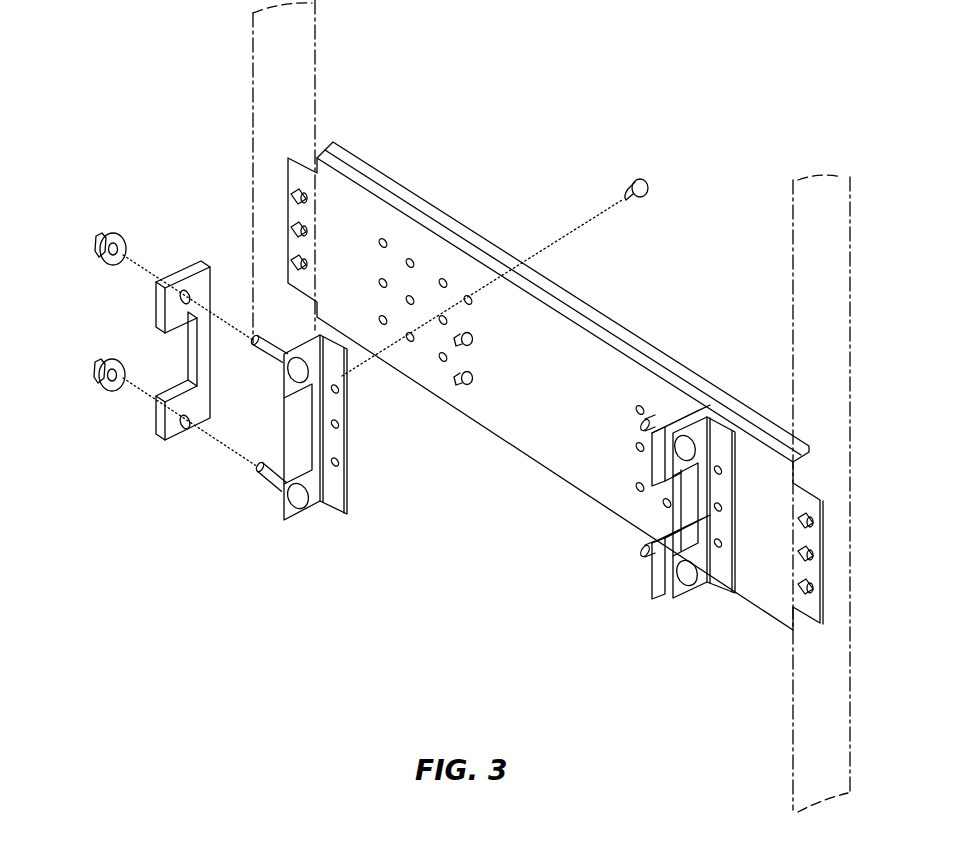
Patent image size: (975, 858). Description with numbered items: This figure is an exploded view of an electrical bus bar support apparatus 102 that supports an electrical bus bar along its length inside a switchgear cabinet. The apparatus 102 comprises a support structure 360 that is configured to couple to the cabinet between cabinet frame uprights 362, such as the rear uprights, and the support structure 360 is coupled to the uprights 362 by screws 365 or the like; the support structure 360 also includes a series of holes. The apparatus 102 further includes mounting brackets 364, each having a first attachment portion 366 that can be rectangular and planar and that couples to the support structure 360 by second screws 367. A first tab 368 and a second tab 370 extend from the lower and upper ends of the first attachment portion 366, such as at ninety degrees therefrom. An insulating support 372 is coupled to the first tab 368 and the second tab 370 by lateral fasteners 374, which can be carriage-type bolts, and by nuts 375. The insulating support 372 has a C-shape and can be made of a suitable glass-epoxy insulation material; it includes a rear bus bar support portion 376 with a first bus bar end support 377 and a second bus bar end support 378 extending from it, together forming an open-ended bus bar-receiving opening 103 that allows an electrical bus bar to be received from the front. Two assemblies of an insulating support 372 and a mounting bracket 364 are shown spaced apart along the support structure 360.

The electrical bus bar support apparatus 102 is at (170, 140).
The bus bar-receiving opening 103 is at (84, 317).
The support structure 360 is at (618, 312).
The cabinet frame uprights 362 is at (317, 53).
The mounting bracket 364 is at (320, 517).
The screws 365 is at (305, 263).
The first attachment portion 366 is at (355, 357).
The second screws 367 is at (628, 190).
The first tab 368 is at (98, 392).
The second tab 370 is at (282, 389).
The insulating support 372 is at (155, 461).
The pin 374 is at (256, 342).
The nuts 375 is at (116, 232).
The rear bus bar support portion 376 is at (189, 357).
The first bus bar end support 377 is at (172, 392).
The second bus bar end support 378 is at (196, 333).